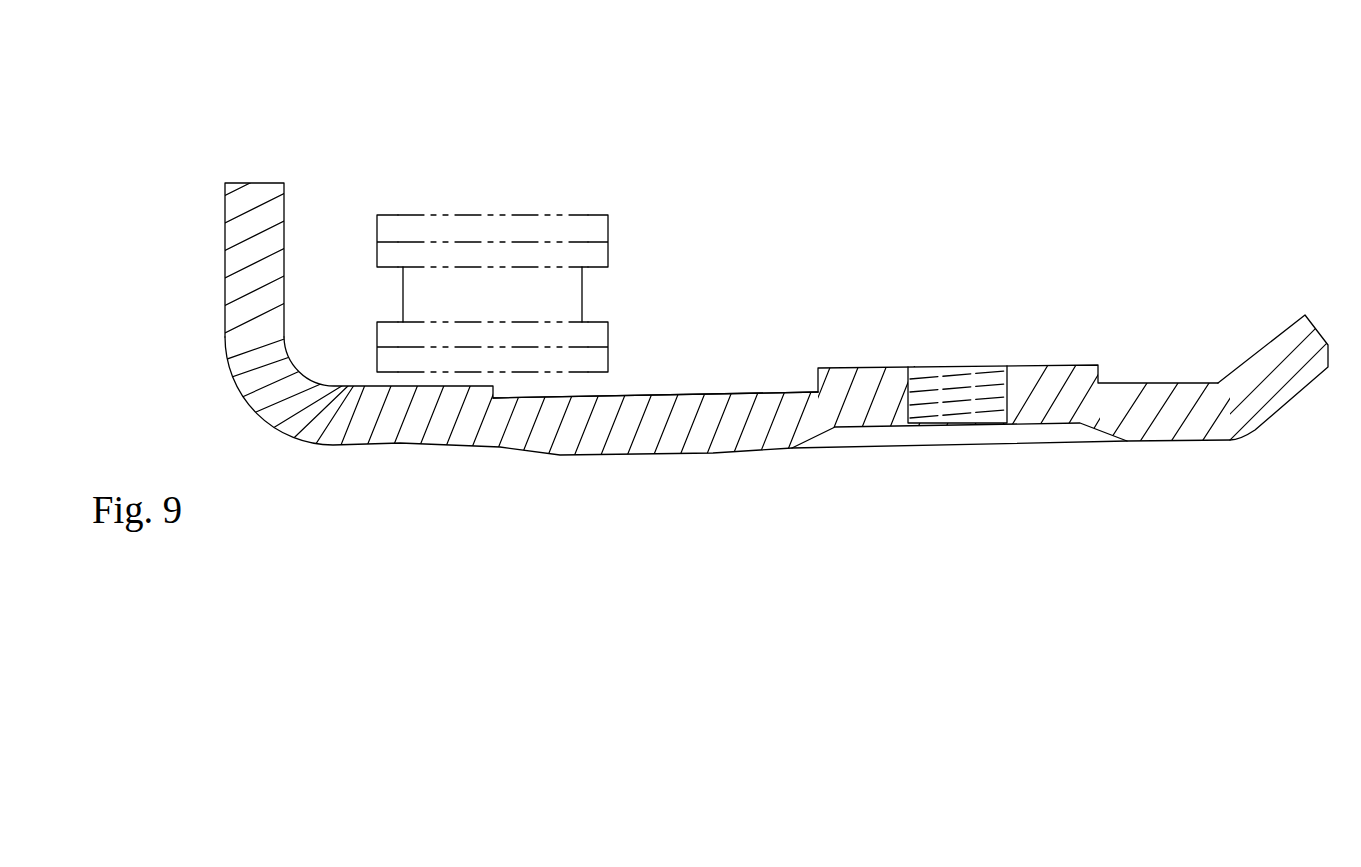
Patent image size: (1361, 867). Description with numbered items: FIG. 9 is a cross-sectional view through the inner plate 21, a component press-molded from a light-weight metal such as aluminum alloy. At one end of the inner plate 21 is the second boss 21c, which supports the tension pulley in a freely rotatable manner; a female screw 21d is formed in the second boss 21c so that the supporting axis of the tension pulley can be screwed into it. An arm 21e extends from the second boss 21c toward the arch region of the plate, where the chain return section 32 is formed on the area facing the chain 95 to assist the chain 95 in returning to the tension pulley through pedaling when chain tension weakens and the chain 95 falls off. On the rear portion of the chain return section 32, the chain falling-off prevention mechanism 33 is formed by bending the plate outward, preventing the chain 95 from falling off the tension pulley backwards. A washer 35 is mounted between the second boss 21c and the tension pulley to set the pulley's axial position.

The inner plate 21 is at (757, 312).
The second boss 21c is at (1053, 362).
The female screw 21d is at (937, 397).
The arm 21e is at (627, 397).
The chain return section 32 is at (395, 385).
The chain falling-off prevention mechanism 33 is at (287, 248).
The washer 35 is at (1267, 343).
The chain 95 is at (573, 215).